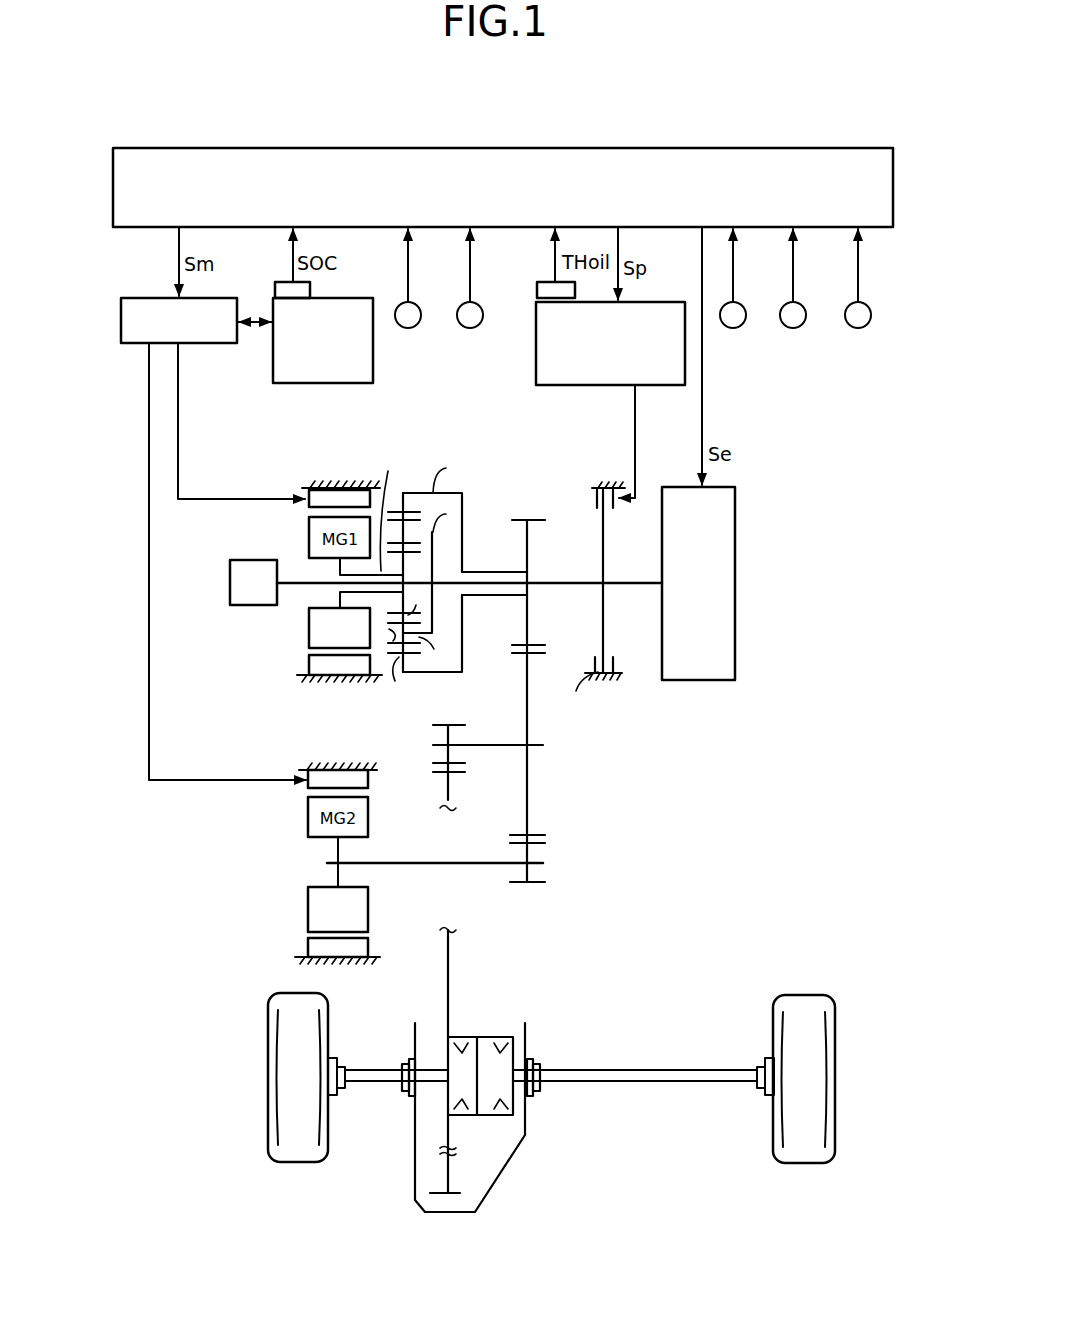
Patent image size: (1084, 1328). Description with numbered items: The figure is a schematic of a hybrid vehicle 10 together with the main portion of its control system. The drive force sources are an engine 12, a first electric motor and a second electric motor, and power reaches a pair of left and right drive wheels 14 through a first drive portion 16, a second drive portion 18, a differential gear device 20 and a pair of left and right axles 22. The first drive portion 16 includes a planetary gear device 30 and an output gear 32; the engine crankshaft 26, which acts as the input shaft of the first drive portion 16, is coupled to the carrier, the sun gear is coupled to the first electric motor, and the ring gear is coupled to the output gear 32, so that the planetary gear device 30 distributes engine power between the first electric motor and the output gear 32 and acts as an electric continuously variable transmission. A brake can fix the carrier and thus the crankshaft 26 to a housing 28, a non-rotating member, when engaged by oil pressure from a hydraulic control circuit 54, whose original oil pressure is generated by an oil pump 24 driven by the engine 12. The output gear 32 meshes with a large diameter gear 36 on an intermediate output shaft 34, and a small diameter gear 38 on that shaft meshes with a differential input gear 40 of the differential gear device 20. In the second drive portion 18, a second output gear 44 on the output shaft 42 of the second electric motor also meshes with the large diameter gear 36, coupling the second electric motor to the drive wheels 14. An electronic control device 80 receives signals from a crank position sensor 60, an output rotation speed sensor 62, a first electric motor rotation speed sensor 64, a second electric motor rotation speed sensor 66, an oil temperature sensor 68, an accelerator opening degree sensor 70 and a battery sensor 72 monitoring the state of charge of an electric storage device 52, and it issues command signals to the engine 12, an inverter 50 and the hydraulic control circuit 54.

The hybrid vehicle 10 is at (750, 103).
The electronic control device 80 is at (836, 153).
The battery sensor 72 is at (282, 284).
The inverter 50 is at (190, 338).
The electric storage device 52 is at (305, 375).
The crank position sensor 60 is at (409, 328).
The output rotation speed sensor 62 is at (471, 328).
The oil temperature sensor 68 is at (539, 290).
The hydraulic control circuit 54 is at (648, 377).
The first electric motor rotation speed sensor 64 is at (735, 328).
The second electric motor rotation speed sensor 66 is at (795, 328).
The accelerator opening degree sensor 70 is at (859, 328).
The planetary gear device 30 is at (411, 478).
The housing 28 is at (600, 482).
The oil pump 24 is at (247, 607).
The output gear 32 is at (530, 648).
The large diameter gear 36 is at (520, 658).
The crankshaft 26 is at (638, 588).
The engine 12 is at (690, 681).
The first drive portion 16 is at (628, 689).
The small diameter gear 38 is at (455, 729).
The differential input gear 40 is at (437, 775).
The intermediate output shaft 34 is at (489, 748).
The second output gear 44 is at (535, 846).
The MG2 output shaft 42 is at (405, 865).
The second drive portion 18 is at (569, 877).
The axles 22 is at (373, 1075).
The drive wheels 14 is at (300, 1152).
The differential gear device 20 is at (541, 1119).